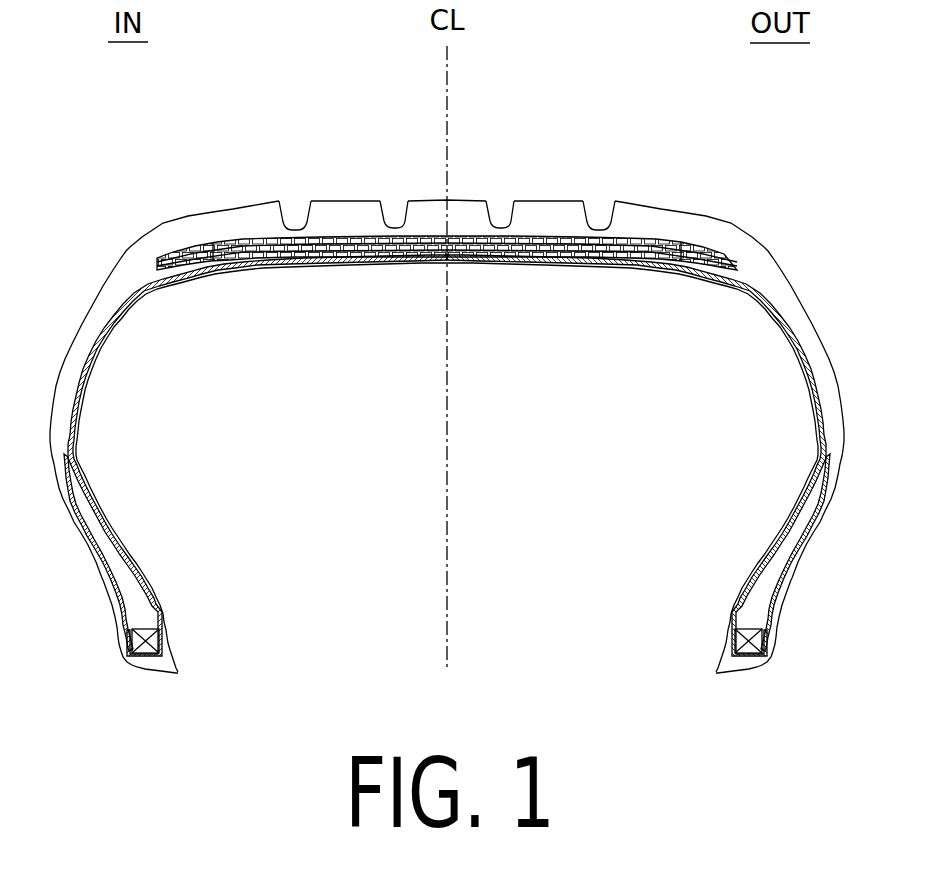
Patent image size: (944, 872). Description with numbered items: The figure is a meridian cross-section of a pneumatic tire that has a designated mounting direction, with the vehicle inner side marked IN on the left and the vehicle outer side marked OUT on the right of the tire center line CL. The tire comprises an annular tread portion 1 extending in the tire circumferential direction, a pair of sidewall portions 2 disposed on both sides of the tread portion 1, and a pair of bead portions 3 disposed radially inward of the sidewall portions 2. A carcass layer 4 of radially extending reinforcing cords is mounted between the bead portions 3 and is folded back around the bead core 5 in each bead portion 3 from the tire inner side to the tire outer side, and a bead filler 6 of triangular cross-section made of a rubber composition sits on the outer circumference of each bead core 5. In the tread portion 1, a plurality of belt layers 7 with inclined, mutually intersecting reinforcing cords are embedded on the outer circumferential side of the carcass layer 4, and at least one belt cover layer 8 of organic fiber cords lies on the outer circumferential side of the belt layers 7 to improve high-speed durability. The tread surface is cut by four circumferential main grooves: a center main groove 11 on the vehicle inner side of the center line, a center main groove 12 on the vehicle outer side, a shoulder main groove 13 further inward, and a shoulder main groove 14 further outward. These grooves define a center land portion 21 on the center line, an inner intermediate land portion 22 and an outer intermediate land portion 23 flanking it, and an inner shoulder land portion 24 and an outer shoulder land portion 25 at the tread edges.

The tread portion 1 is at (462, 190).
The sidewall portion 2 is at (57, 378).
The bead portion 3 is at (109, 635).
The carcass layer 4 is at (112, 322).
The bead core 5 is at (145, 632).
The bead filler 6 is at (137, 605).
The belt layer 7 is at (612, 262).
The belt cover layer 8 is at (218, 244).
The center main groove 11 is at (392, 198).
The center main groove 12 is at (501, 198).
The shoulder main groove 13 is at (303, 198).
The shoulder main groove 14 is at (588, 198).
The center land portion 21 is at (424, 198).
The inner intermediate land portion 22 is at (342, 198).
The outer intermediate land portion 23 is at (556, 198).
The inner shoulder land portion 24 is at (258, 205).
The outer shoulder land portion 25 is at (638, 205).